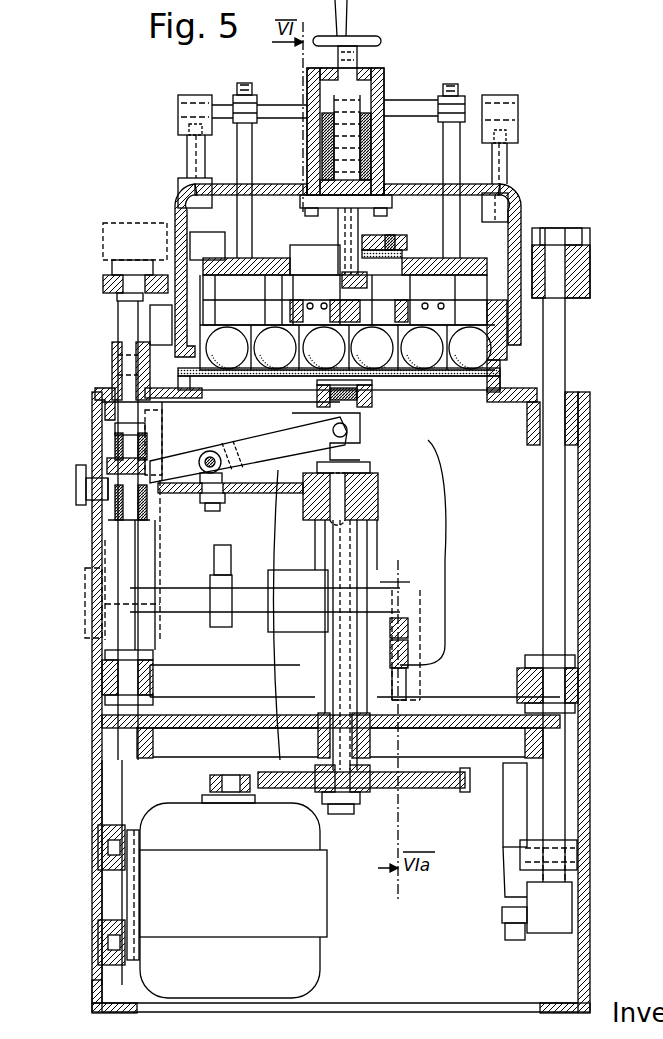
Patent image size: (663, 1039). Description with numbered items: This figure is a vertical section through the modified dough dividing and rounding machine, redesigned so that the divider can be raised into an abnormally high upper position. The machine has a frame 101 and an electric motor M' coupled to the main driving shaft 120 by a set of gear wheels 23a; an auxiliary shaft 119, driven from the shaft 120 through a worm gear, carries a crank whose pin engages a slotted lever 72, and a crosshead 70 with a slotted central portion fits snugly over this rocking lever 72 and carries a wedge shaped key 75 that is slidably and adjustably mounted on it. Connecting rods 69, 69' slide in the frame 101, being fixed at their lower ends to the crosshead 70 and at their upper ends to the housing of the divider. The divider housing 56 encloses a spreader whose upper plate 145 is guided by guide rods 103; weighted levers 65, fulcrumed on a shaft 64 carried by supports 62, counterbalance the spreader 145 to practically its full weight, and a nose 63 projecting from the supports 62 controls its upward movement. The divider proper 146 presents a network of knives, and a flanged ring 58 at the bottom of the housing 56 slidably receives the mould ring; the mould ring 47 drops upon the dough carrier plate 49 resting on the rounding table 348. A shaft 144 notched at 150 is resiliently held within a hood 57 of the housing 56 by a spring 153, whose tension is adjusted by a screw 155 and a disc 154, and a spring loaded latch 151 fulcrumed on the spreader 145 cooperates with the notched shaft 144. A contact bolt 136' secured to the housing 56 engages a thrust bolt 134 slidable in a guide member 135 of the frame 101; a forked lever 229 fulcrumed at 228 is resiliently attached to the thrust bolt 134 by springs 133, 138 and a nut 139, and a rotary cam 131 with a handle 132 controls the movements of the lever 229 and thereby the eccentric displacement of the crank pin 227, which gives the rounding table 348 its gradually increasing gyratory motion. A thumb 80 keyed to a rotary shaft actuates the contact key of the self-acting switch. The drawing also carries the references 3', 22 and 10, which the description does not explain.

The screw 155 is at (352, 52).
The disc 154 is at (374, 88).
The spring 153 is at (376, 146).
The hood 57 is at (320, 145).
The housing 56 is at (192, 195).
The nose 63 is at (200, 250).
The supports 62 is at (180, 145).
The shaft 64 is at (298, 107).
The guide rod 103 is at (243, 158).
The weighted levers 65 is at (456, 150).
The rod 3' is at (463, 190).
The spring loaded latch 151 is at (378, 232).
The shaft 144 is at (338, 225).
The spreader 145 is at (435, 260).
The notch 150 is at (350, 282).
The mould ring 47 is at (507, 322).
The flanged ring 58 is at (502, 352).
The dough carrier plate 49 is at (510, 370).
The rounding table 348 is at (505, 382).
The divider proper 146 is at (440, 320).
The connecting rod 69' is at (594, 590).
The frame 101 is at (92, 675).
The contact bolt 136' is at (112, 491).
The thrust bolt 134 is at (114, 368).
The guide member 135 is at (112, 383).
The crank pin 227 is at (377, 410).
The forked lever 229 is at (268, 447).
The fulcrum 228 is at (210, 456).
The spring 138 is at (140, 520).
The spring 133 is at (128, 448).
The nut 139 is at (130, 478).
The handle 132 is at (82, 488).
The rotary cam 131 is at (110, 495).
The connecting rod 69 is at (100, 565).
The nut 22 is at (343, 500).
The main driving shaft 120 is at (345, 545).
The auxiliary shaft 119 is at (183, 610).
The thumb 80 is at (222, 567).
The axis 10 is at (410, 581).
The wedge shaped key 75 is at (409, 630).
The slotted lever 72 is at (406, 650).
The crosshead 70 is at (462, 672).
The set of gear wheels 23a is at (417, 782).
The electric motor M' is at (230, 879).